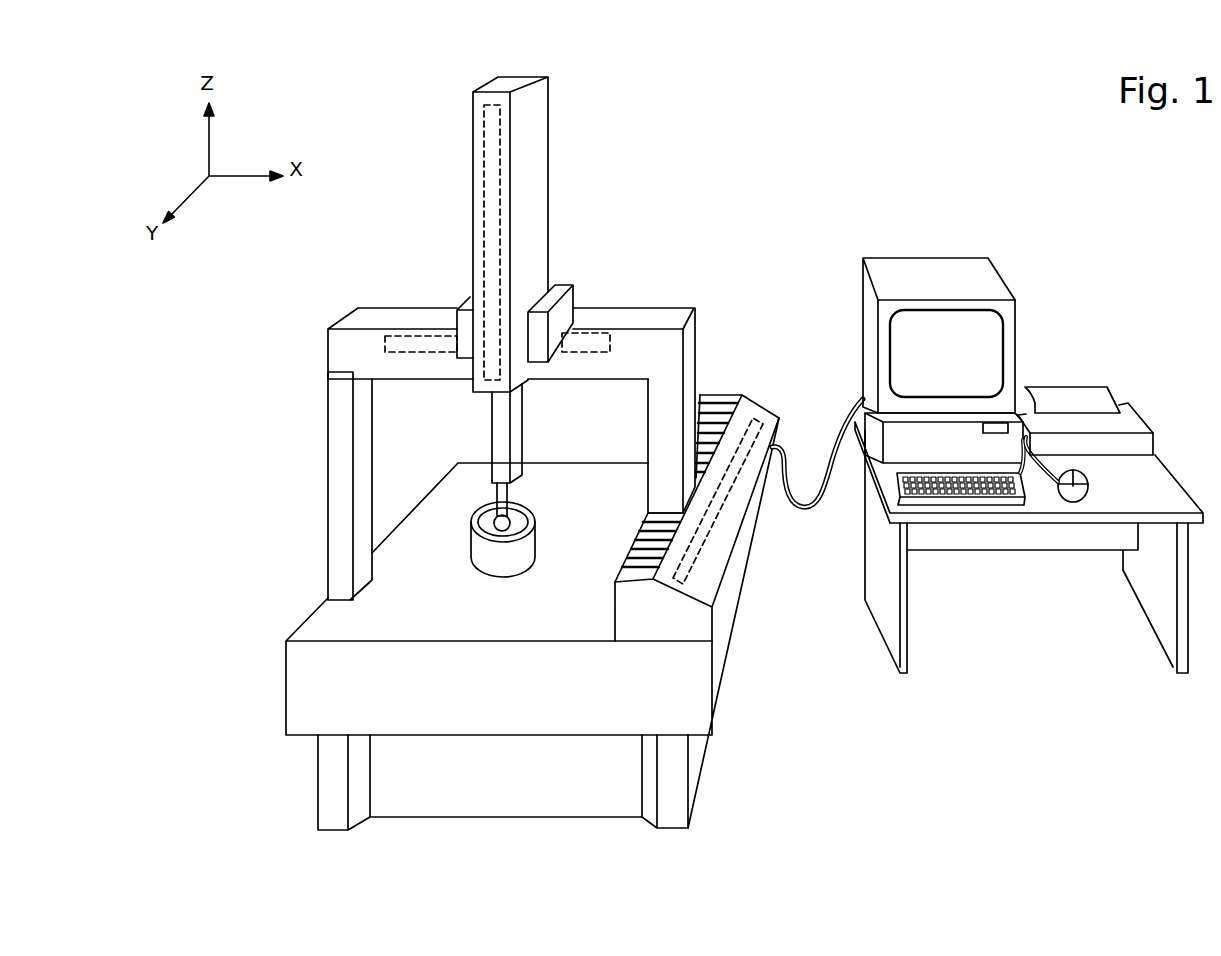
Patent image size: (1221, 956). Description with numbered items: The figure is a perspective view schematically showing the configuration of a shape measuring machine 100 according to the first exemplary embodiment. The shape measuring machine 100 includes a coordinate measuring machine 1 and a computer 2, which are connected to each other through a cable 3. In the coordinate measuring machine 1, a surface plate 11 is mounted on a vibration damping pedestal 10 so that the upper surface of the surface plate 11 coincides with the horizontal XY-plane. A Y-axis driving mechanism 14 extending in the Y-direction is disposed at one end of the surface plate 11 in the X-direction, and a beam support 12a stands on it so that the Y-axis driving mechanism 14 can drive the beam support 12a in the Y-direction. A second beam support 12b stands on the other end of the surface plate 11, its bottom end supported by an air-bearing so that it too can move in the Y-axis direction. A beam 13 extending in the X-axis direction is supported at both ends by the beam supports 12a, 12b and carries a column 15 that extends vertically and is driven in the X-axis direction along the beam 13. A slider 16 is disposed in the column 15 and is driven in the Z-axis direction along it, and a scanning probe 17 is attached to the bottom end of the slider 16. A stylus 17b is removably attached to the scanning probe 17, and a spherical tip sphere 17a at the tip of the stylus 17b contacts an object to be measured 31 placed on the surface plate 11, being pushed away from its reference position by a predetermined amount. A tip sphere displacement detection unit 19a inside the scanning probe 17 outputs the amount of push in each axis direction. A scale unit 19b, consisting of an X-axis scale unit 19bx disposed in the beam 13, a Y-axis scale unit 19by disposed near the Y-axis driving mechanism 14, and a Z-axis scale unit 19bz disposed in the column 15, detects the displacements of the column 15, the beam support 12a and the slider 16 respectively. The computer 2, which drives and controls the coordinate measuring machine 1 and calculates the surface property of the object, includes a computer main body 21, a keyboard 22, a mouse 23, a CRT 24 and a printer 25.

The shape measuring machine 100 is at (817, 58).
The coordinate measuring machine 1 is at (595, 162).
The computer 2 is at (1048, 325).
The cable 3 is at (802, 508).
The vibration damping pedestal 10 is at (325, 793).
The surface plate 11 is at (292, 690).
The beam support 12a is at (691, 325).
The beam support 12b is at (335, 483).
The beam 13 is at (369, 314).
The Y-axis driving mechanism 14 is at (773, 418).
The column 15 is at (473, 131).
The slider 16 is at (496, 419).
The scanning probe 17 is at (508, 497).
The tip sphere displacement detection unit 19a is at (502, 507).
The tip sphere 17a is at (536, 539).
The stylus 17b is at (487, 516).
The scale unit 19b is at (573, 344).
The X-axis scale unit 19bx is at (594, 336).
The Y-axis scale unit 19by is at (754, 416).
The Z-axis scale unit 19bz is at (484, 222).
The computer main body 21 is at (863, 399).
The keyboard 22 is at (971, 500).
The mouse 23 is at (1081, 497).
The CRT 24 is at (930, 262).
The printer 25 is at (1132, 422).
The object to be measured 31 is at (472, 563).